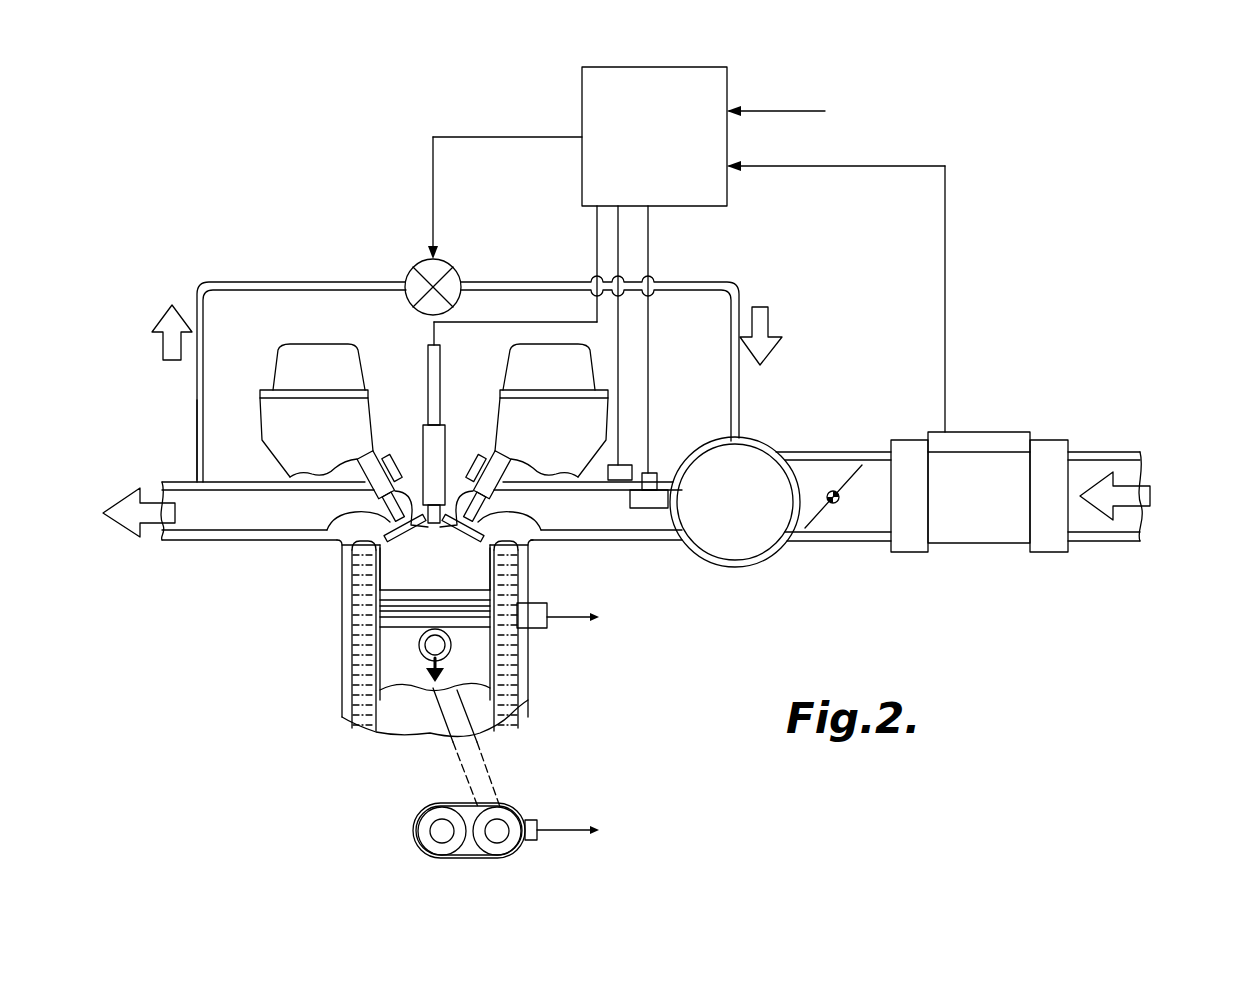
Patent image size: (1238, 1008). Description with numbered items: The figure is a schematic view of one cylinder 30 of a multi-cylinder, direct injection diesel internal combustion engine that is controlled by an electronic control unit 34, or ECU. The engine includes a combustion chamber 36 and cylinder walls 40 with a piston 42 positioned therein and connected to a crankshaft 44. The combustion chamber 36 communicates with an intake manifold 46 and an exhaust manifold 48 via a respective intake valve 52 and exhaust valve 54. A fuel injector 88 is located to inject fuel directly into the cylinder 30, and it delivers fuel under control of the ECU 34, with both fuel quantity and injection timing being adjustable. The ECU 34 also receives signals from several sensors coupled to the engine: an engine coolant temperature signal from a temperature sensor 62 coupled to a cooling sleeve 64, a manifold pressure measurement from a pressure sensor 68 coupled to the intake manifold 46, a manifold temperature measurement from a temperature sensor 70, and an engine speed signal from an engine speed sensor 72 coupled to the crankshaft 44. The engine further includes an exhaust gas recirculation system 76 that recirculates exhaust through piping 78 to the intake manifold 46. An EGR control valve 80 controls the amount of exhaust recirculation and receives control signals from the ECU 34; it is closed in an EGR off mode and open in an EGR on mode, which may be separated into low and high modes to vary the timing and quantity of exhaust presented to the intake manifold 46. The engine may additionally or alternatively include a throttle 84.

The cylinder 30 is at (342, 682).
The electronic control unit 34 is at (581, 104).
The combustion chamber 36 is at (421, 577).
The cylinder walls 40 is at (390, 570).
The piston 42 is at (475, 656).
The crankshaft 44 is at (437, 829).
The intake manifold 46 is at (605, 541).
The exhaust manifold 48 is at (197, 541).
The intake valve 52 is at (516, 520).
The exhaust valve 54 is at (352, 520).
The temperature sensor 62 is at (547, 619).
The cooling sleeve 64 is at (506, 697).
The pressure sensor 68 is at (648, 508).
The temperature sensor 70 is at (623, 466).
The engine speed sensor 72 is at (539, 822).
The exhaust gas recirculation system 76 is at (366, 262).
The piping 78 is at (200, 404).
The EGR control valve 80 is at (448, 259).
The throttle 84 is at (830, 491).
The fuel injector 88 is at (423, 437).